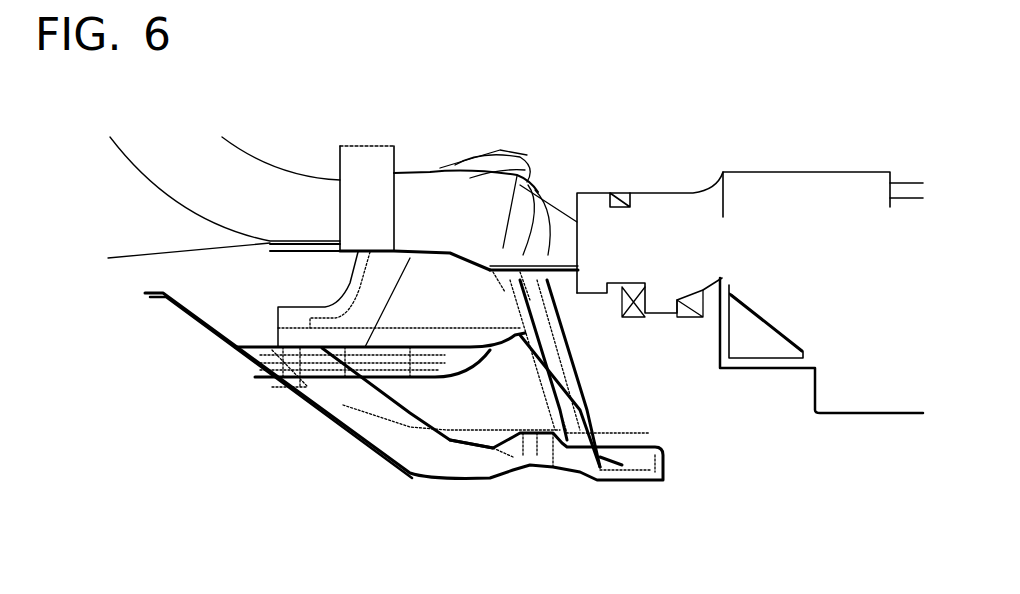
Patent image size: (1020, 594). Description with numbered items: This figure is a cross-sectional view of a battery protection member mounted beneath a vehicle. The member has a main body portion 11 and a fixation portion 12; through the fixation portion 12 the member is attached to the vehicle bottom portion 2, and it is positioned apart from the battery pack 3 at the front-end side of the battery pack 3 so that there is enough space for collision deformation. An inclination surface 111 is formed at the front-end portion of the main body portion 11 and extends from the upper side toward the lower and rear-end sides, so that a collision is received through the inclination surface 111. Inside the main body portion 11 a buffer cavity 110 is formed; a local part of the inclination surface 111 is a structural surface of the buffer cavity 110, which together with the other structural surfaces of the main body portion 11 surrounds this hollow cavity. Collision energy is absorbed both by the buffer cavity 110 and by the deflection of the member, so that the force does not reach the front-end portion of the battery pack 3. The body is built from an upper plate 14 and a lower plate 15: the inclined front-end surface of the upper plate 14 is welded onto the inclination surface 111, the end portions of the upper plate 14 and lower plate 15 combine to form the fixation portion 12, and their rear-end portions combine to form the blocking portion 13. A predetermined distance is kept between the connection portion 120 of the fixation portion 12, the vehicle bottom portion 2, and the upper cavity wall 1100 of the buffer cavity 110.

The vehicle bottom portion 2 is at (147, 243).
The battery pack 3 is at (877, 387).
The main body portion 11 is at (517, 452).
The fixation portion 12 is at (515, 292).
The blocking portion 13 is at (598, 480).
The upper plate 14 is at (215, 325).
The lower plate 15 is at (242, 355).
The buffer cavity 110 is at (363, 405).
The inclination surface 111 is at (293, 395).
The connection portion 120 is at (493, 152).
The upper cavity wall 1100 is at (537, 355).